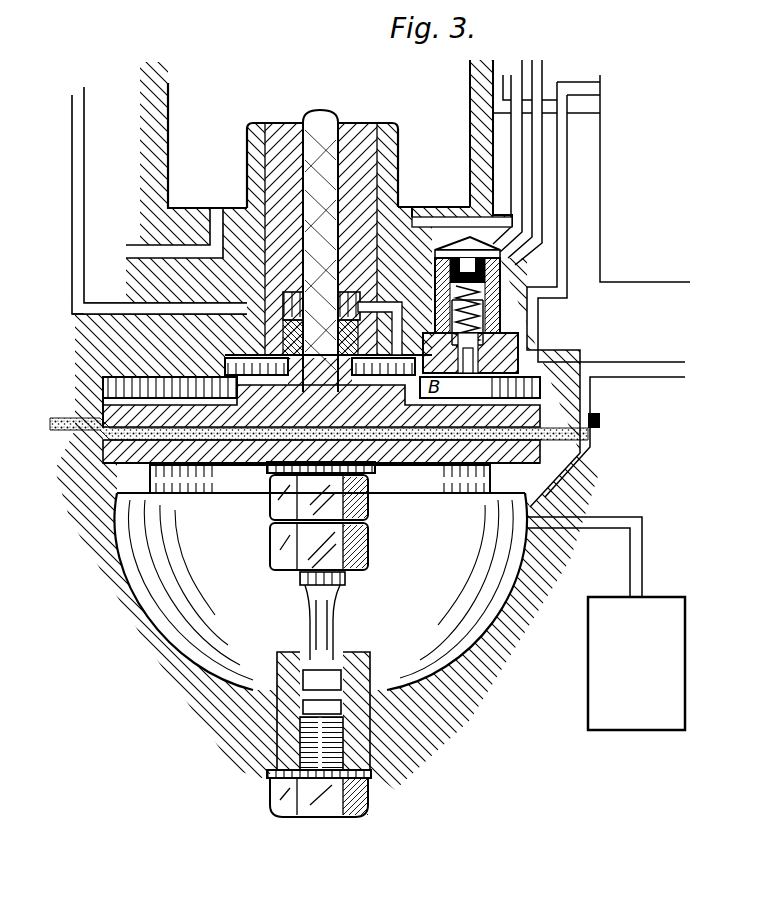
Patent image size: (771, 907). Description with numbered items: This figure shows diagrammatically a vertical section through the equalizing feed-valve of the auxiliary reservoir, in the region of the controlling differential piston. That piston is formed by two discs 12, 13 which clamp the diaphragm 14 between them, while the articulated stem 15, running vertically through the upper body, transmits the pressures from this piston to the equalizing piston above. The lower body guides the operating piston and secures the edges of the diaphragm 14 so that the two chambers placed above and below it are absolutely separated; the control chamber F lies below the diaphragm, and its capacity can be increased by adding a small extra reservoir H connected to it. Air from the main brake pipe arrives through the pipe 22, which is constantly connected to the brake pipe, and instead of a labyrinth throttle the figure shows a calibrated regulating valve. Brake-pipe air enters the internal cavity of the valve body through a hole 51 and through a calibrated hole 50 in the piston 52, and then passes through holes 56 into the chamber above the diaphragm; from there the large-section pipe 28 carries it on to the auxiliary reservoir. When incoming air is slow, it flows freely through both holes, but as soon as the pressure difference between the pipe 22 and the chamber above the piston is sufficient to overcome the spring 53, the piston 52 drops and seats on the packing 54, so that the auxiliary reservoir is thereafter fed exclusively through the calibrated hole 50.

The disc 12 is at (98, 405).
The disc 13 is at (102, 472).
The diaphragm 14 is at (63, 430).
The articulated stem 15 is at (285, 247).
The pipe 22 is at (538, 167).
The pipe 28 is at (382, 307).
The calibrated hole 50 is at (493, 278).
The hole 51 is at (420, 293).
The piston 52 is at (500, 300).
The spring 53 is at (500, 315).
The packing 54 is at (483, 324).
The holes 56 is at (518, 357).
The control chamber F is at (320, 591).
The extra reservoir H is at (636, 663).